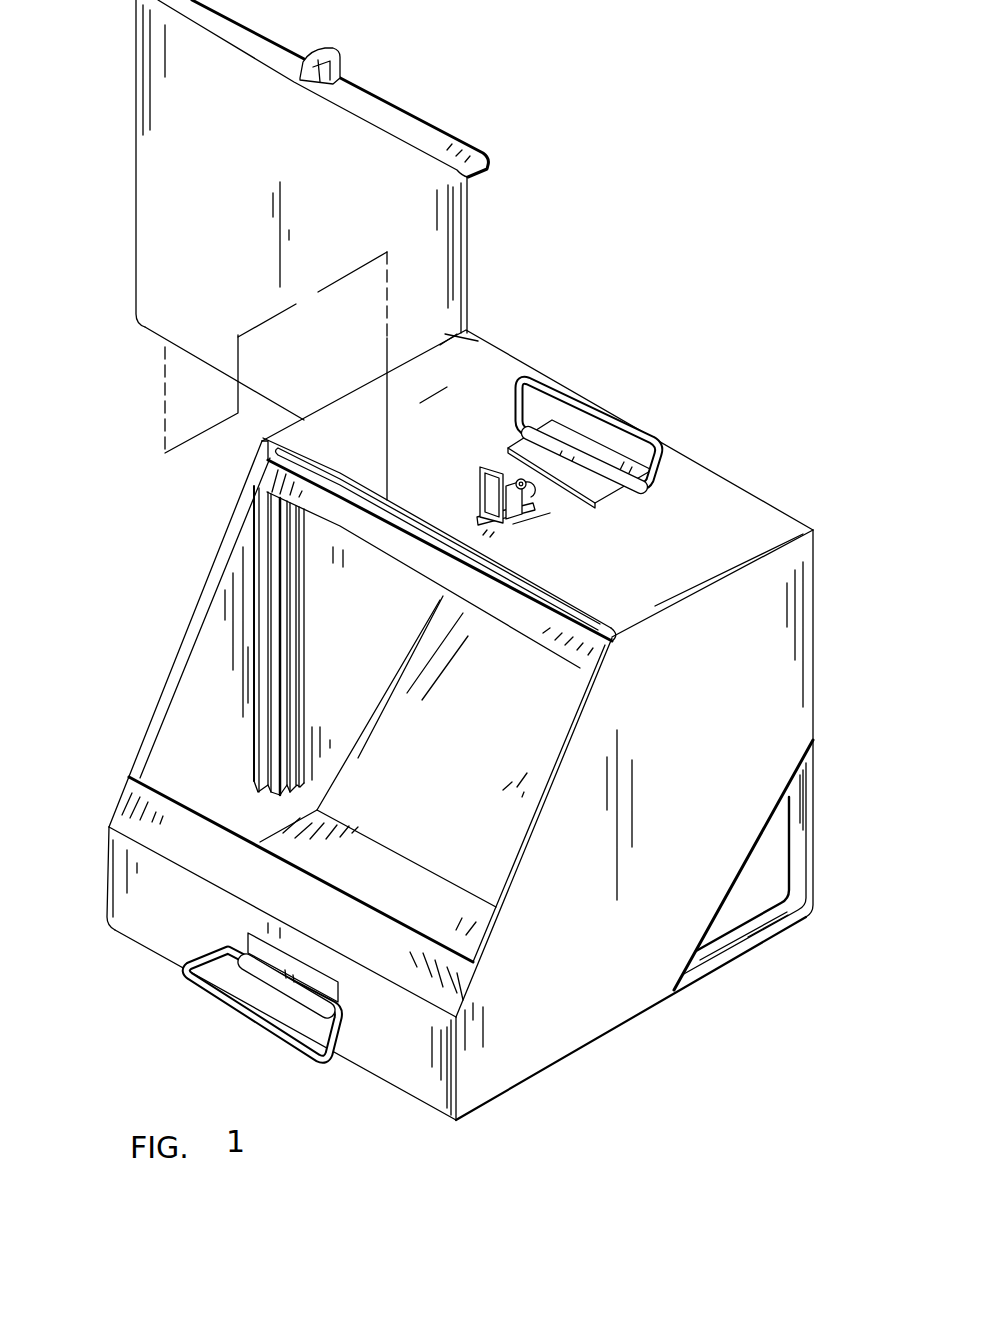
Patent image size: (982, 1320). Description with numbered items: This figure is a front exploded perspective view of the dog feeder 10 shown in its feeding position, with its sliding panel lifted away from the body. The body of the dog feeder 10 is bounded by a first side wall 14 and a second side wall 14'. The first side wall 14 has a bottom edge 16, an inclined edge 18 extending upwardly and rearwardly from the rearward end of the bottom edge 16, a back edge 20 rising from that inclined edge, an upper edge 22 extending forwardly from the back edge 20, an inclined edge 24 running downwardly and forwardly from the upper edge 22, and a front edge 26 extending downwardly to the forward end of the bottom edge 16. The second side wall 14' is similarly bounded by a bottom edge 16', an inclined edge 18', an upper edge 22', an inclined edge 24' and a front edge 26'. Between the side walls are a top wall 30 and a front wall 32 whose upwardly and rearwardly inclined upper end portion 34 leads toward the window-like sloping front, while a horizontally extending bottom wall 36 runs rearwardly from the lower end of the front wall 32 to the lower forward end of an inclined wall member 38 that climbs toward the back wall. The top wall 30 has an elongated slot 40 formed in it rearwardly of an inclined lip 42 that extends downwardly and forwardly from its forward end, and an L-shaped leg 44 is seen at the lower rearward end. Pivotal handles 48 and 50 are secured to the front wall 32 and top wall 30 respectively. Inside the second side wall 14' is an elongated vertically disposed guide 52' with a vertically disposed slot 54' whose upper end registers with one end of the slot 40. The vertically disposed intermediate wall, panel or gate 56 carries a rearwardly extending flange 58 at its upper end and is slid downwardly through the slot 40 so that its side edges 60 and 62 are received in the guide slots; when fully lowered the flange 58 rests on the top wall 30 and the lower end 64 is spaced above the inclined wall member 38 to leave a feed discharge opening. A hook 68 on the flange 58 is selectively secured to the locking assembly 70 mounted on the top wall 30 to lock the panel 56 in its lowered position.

The dog feeder 10 is at (438, 577).
The first side wall 14 is at (693, 825).
The second side wall 14' is at (220, 663).
The bottom edge 16 is at (631, 1033).
The bottom edge 16' is at (345, 816).
The inclined edge 18 is at (743, 889).
The inclined edge 18' is at (378, 751).
The back edge 20 is at (438, 703).
The upper edge 22 is at (729, 571).
The upper edge 22' is at (275, 376).
The inclined edge 24 is at (534, 827).
The inclined edge 24' is at (157, 634).
The front edge 26 is at (489, 1079).
The front edge 26' is at (87, 847).
The top wall 30 is at (620, 554).
The front wall 32 is at (393, 1047).
The inclined upper end portion 34 is at (342, 944).
The bottom wall 36 is at (422, 903).
The inclined wall member 38 is at (512, 731).
The elongated slot 40 is at (307, 457).
The inclined lip 42 is at (226, 489).
The L-shaped leg 44 is at (813, 838).
The pivotal handle 48 is at (253, 1027).
The pivotal handle 50 is at (653, 460).
The elongated vertically disposed guide 52' is at (324, 640).
The vertically disposed slot 54' is at (337, 646).
The intermediate wall, panel or gate 56 is at (316, 210).
The rearwardly extending flange 58 is at (440, 133).
The side edge 60 is at (468, 250).
The side edge 62 is at (133, 163).
The lower end 64 is at (155, 337).
The hook 68 is at (340, 53).
The locking assembly 70 is at (463, 500).